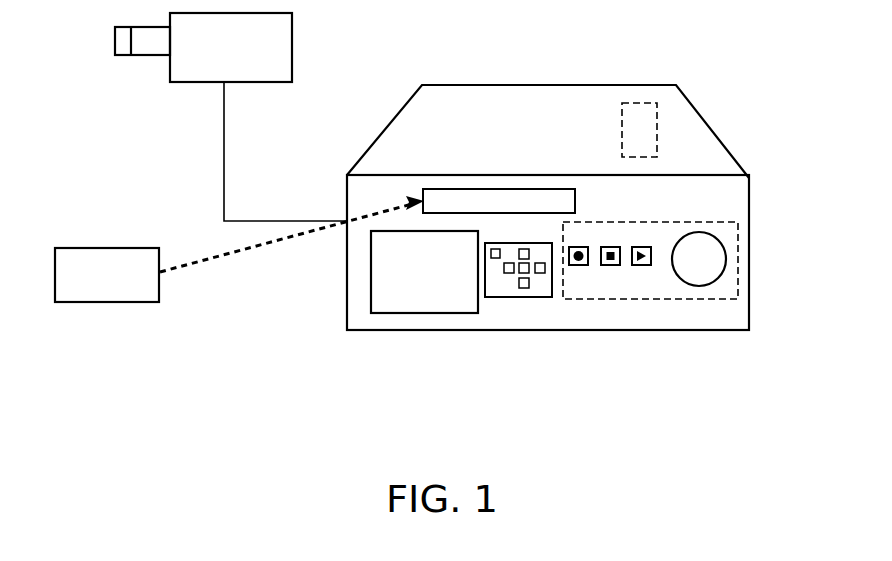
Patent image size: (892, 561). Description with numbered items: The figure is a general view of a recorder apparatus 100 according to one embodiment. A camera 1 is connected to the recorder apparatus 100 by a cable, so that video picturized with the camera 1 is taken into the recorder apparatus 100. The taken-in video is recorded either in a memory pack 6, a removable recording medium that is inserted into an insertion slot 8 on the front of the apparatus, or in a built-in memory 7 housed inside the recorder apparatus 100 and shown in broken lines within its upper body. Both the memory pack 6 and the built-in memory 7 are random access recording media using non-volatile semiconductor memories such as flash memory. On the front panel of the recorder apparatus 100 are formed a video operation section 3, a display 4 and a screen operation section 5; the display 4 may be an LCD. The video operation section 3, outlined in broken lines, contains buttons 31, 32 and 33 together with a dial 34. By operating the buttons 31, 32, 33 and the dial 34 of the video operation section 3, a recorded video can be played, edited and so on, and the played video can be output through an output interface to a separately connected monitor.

The recorder apparatus 100 is at (493, 85).
The camera 1 is at (292, 30).
The video operation section 3 is at (738, 238).
The display 4 is at (371, 298).
The screen operation section 5 is at (500, 297).
The memory pack 6 is at (136, 248).
The built-in memory 7 is at (642, 103).
The insertion slot 8 is at (466, 189).
The button 31 is at (578, 265).
The button 32 is at (610, 265).
The button 33 is at (641, 265).
The dial 34 is at (726, 259).